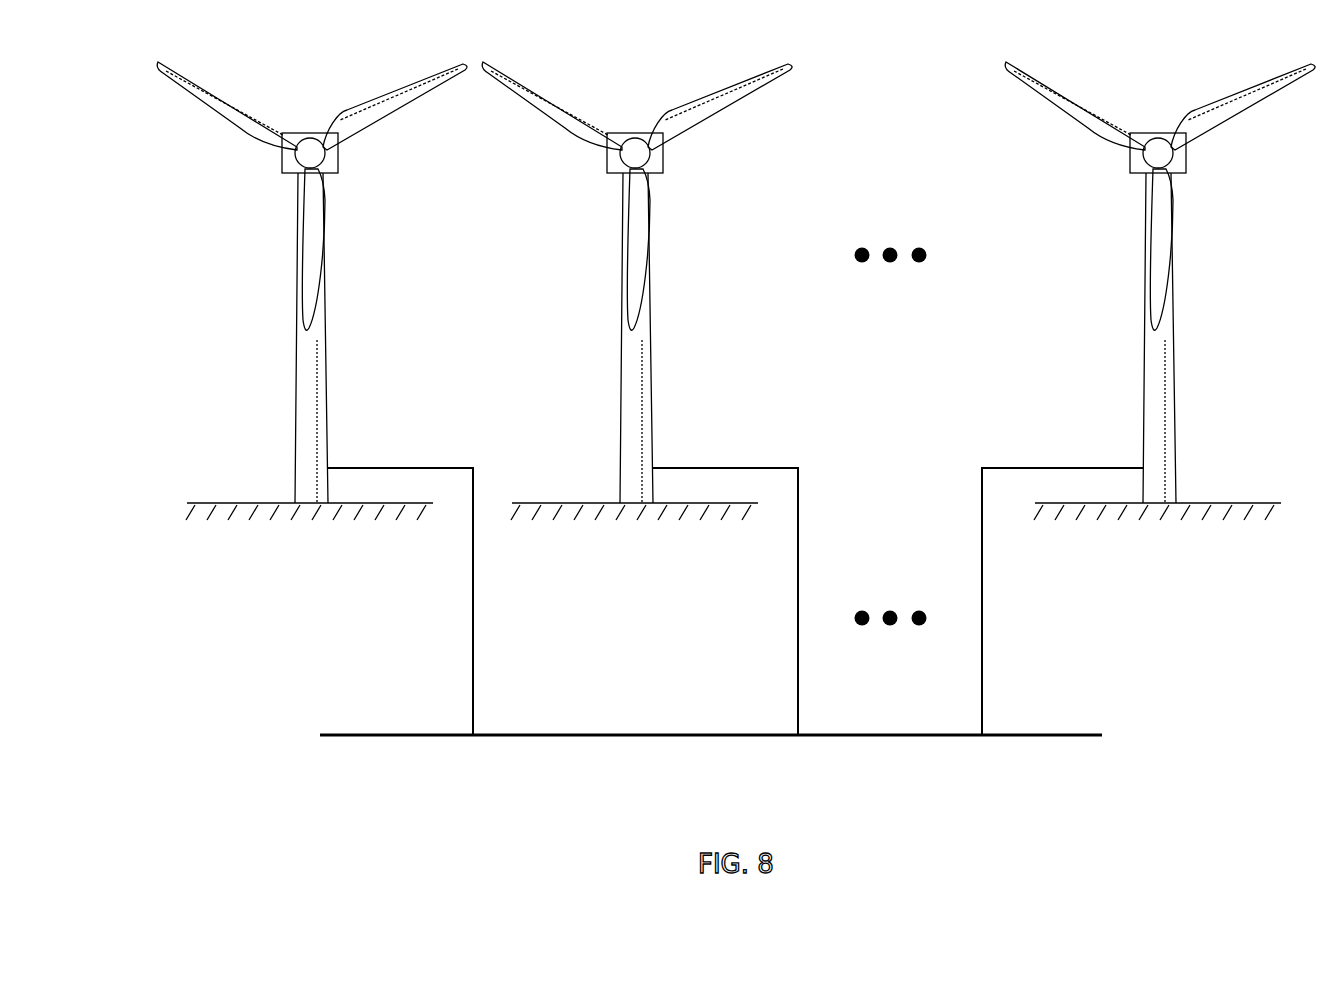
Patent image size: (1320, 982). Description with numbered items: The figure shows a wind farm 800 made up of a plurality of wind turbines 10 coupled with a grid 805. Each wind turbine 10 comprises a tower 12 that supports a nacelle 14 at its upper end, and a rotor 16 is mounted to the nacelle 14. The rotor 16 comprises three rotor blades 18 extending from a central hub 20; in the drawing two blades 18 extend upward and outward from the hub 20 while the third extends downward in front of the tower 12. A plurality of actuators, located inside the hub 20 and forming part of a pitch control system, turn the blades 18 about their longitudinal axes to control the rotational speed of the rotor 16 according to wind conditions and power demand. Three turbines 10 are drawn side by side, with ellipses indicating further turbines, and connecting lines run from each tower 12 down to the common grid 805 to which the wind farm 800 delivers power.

The wind turbine 10 is at (736, 275).
The tower 12 is at (748, 338).
The nacelle 14 is at (749, 154).
The rotor 16 is at (736, 188).
The rotor blades 18 is at (736, 188).
The hub 20 is at (734, 141).
The wind farm 800 is at (728, 391).
The grid 805 is at (363, 737).